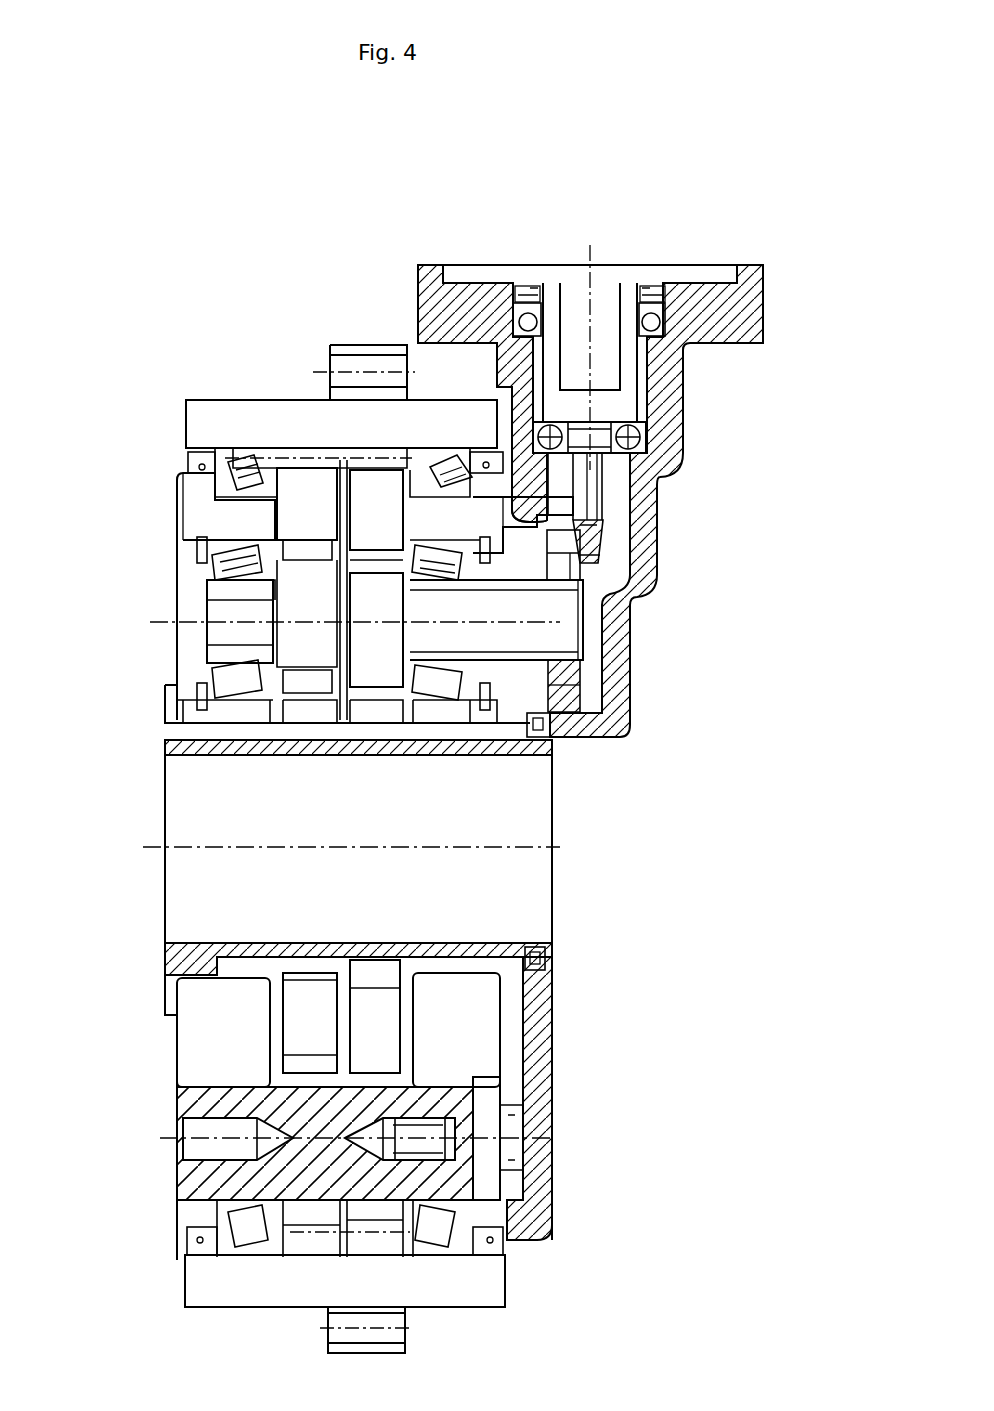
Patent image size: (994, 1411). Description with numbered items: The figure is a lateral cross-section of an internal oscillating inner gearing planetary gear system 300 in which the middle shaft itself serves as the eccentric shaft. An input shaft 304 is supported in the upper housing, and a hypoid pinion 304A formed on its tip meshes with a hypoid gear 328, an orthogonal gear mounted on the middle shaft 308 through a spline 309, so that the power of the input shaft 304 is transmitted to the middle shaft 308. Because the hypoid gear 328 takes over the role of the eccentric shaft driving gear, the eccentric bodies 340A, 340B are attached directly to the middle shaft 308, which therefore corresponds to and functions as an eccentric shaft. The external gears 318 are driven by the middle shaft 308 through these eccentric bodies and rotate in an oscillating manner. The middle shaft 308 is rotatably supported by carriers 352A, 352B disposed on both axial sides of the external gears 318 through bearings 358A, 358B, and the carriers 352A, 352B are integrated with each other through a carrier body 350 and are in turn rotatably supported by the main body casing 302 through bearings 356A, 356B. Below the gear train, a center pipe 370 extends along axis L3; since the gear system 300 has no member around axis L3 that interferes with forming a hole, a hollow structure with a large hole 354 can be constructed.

The gear system 300 is at (470, 495).
The main body casing 302 is at (236, 406).
The input shaft 304 is at (612, 408).
The hypoid pinion 304A is at (640, 545).
The middle shaft 308 is at (563, 637).
The spline 309 is at (643, 588).
The external gears 318 is at (308, 485).
The hypoid gear 328 is at (563, 703).
The eccentric body 340A is at (245, 605).
The eccentric body 340B is at (370, 580).
The carrier body 350 is at (378, 445).
The carrier 352A is at (178, 510).
The carrier 352B is at (507, 498).
The hole 354 is at (515, 760).
The bearing 356A is at (228, 454).
The bearing 356B is at (427, 467).
The bearing 358A is at (205, 563).
The bearing 358B is at (440, 580).
The center pipe 370 is at (192, 957).
The axis L3 is at (400, 850).